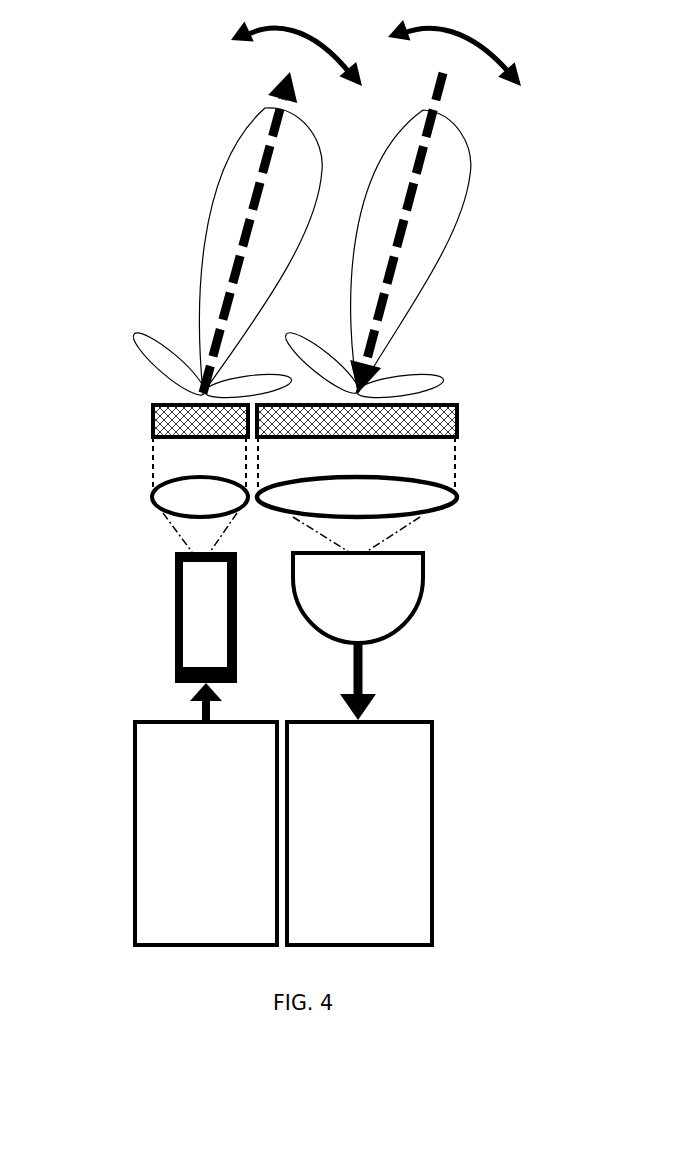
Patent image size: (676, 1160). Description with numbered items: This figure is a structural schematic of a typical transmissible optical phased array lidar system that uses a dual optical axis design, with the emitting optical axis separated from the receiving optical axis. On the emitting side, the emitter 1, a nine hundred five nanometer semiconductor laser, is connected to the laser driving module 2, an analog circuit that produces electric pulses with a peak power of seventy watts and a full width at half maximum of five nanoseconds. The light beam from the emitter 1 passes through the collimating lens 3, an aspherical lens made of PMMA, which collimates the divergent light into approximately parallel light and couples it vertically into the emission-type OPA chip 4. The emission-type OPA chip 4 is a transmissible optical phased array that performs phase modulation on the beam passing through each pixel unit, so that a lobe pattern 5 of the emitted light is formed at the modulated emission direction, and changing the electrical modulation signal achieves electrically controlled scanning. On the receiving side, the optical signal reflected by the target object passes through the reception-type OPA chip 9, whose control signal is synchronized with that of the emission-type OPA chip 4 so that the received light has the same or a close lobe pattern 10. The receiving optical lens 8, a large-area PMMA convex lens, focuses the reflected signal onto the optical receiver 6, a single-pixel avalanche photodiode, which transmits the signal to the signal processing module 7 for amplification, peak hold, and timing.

The emitter 1 is at (193, 640).
The laser driving module 2 is at (135, 790).
The collimating lens 3 is at (153, 497).
The emission-type OPA chip 4 is at (153, 418).
The lobe pattern 5 is at (200, 288).
The optical receiver 6 is at (423, 597).
The signal processing module 7 is at (433, 848).
The receiving optical lens 8 is at (455, 497).
The reception-type OPA chip 9 is at (457, 420).
The received laser beam 10 is at (427, 295).